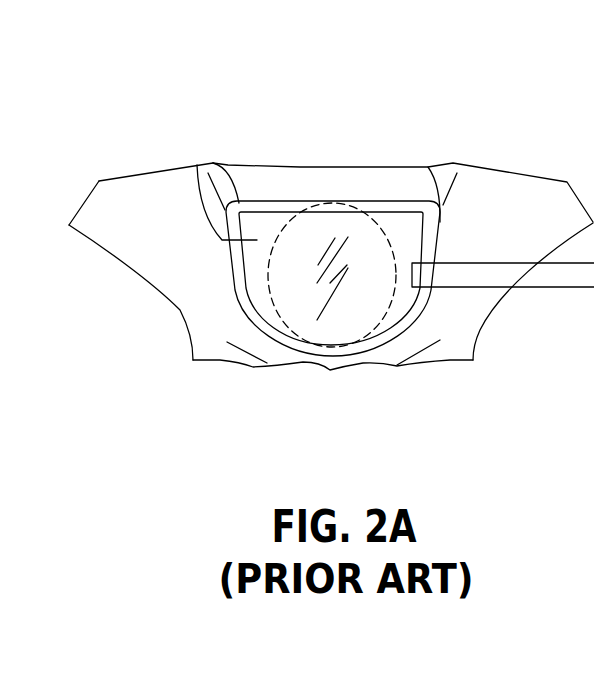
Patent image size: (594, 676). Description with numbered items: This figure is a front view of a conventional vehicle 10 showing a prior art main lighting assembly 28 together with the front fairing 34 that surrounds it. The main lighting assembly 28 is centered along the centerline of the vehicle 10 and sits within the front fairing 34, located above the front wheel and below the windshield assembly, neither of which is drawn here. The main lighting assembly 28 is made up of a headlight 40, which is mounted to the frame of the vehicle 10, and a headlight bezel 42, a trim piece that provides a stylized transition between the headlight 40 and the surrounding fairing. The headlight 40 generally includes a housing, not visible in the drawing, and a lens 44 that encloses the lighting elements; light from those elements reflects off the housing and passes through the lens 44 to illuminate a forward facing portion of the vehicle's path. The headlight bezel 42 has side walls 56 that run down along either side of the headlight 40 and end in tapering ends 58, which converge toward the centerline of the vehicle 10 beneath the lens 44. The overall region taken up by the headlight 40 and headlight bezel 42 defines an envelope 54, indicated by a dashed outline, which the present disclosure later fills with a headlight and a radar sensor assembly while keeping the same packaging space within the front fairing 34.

The vehicle 10 is at (152, 83).
The main lighting assembly 28 is at (329, 180).
The front fairing 34 is at (127, 202).
The headlight 40 is at (370, 209).
The headlight bezel 42 is at (416, 205).
The lens 44 is at (337, 290).
The envelope 54 is at (392, 248).
The side walls 56 is at (197, 165).
The tapering ends 58 is at (272, 320).